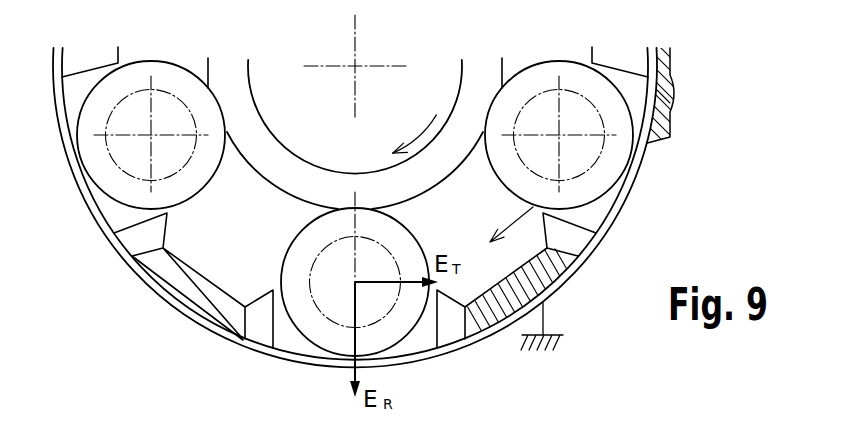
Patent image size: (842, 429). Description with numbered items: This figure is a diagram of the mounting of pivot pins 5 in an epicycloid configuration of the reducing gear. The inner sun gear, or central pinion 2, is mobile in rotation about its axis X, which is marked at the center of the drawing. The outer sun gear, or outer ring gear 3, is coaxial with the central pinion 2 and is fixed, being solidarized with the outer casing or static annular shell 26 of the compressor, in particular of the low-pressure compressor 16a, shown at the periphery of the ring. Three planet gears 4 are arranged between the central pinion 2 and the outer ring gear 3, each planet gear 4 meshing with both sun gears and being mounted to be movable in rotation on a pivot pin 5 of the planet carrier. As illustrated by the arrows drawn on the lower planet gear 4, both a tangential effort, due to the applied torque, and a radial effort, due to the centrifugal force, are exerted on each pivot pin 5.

The inner sun gear 2 is at (458, 133).
The outer sun gear 3 is at (622, 210).
The planet gear 4 is at (105, 168).
The pivot pin 5 is at (163, 105).
The low-pressure compressor 16a is at (700, 65).
The static annular shell 26 is at (662, 100).
The axis X is at (353, 65).